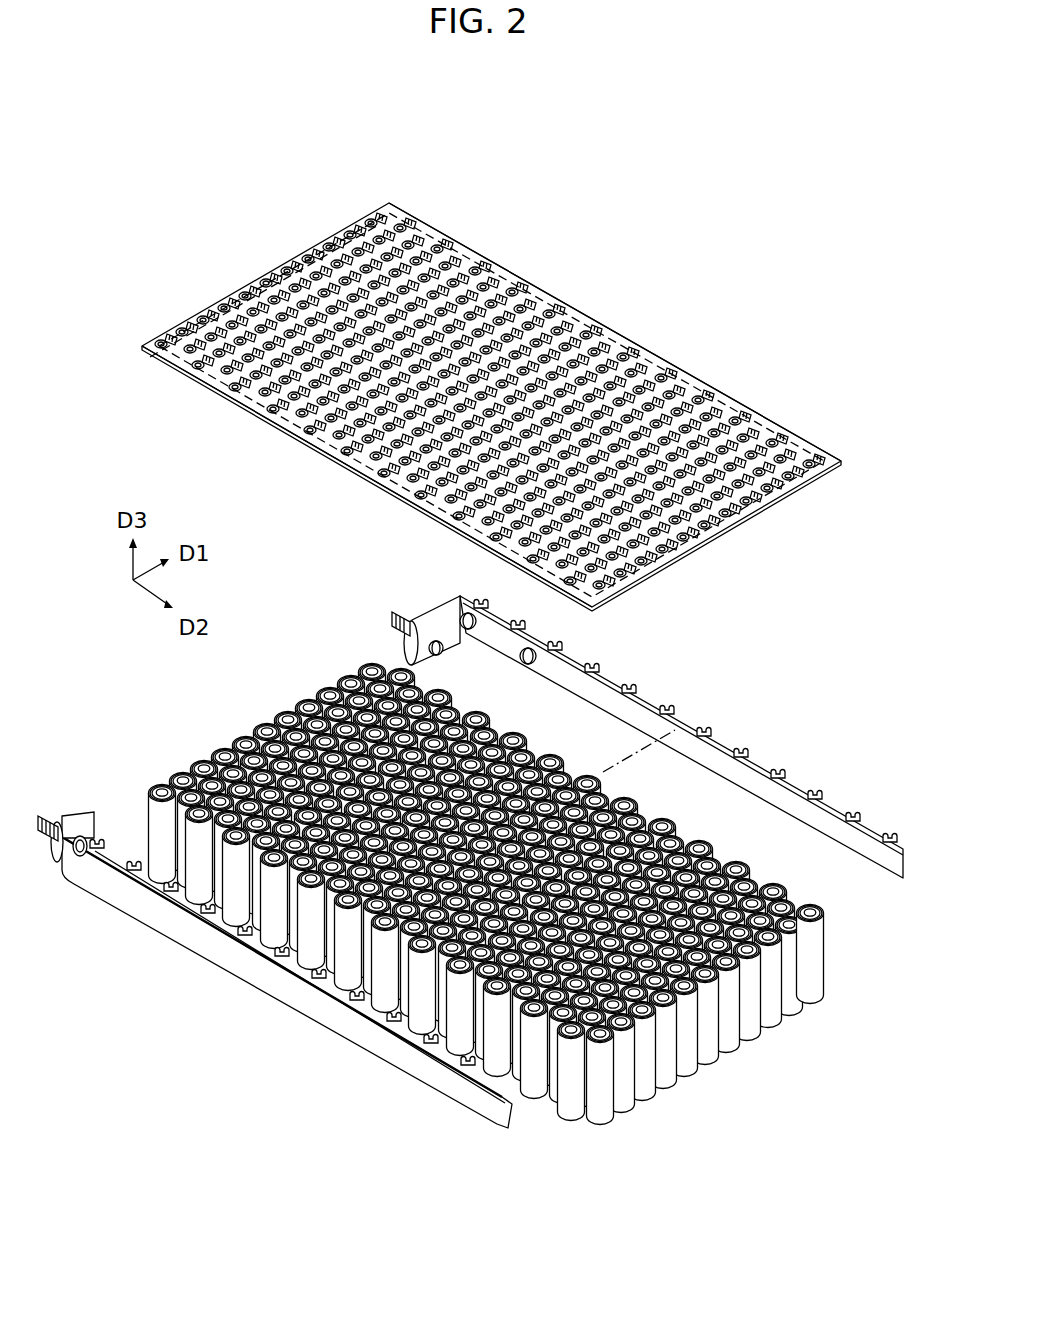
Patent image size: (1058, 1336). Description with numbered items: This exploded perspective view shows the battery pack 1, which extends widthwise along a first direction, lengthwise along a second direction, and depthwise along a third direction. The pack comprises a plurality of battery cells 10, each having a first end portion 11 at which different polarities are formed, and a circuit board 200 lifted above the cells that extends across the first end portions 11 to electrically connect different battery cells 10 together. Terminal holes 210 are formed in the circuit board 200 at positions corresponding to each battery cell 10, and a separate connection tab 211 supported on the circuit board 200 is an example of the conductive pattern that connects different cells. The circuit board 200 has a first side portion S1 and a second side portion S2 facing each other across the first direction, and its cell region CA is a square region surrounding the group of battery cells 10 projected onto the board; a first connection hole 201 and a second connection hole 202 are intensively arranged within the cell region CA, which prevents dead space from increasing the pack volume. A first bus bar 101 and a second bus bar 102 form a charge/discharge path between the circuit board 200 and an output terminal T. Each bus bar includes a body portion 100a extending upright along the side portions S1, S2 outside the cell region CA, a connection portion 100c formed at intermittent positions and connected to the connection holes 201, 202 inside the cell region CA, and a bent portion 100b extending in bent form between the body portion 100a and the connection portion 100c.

The battery pack 1 is at (687, 172).
The circuit board 200 is at (250, 268).
The cell region CA is at (318, 243).
The first side portion S1 is at (356, 471).
The second side portion S2 is at (621, 332).
The first connection hole 201 is at (305, 447).
The second connection hole 202 is at (691, 381).
The terminal hole 210 is at (747, 419).
The connection tab 211 is at (788, 453).
The battery cell 10 is at (823, 958).
The first end portion 11 is at (814, 908).
The first bus bar 101 is at (347, 1031).
The second bus bar 102 is at (786, 808).
The body portion 100a is at (283, 991).
The bent portion 100b is at (256, 960).
The connection portion 100c is at (229, 937).
The output terminal T is at (394, 618).